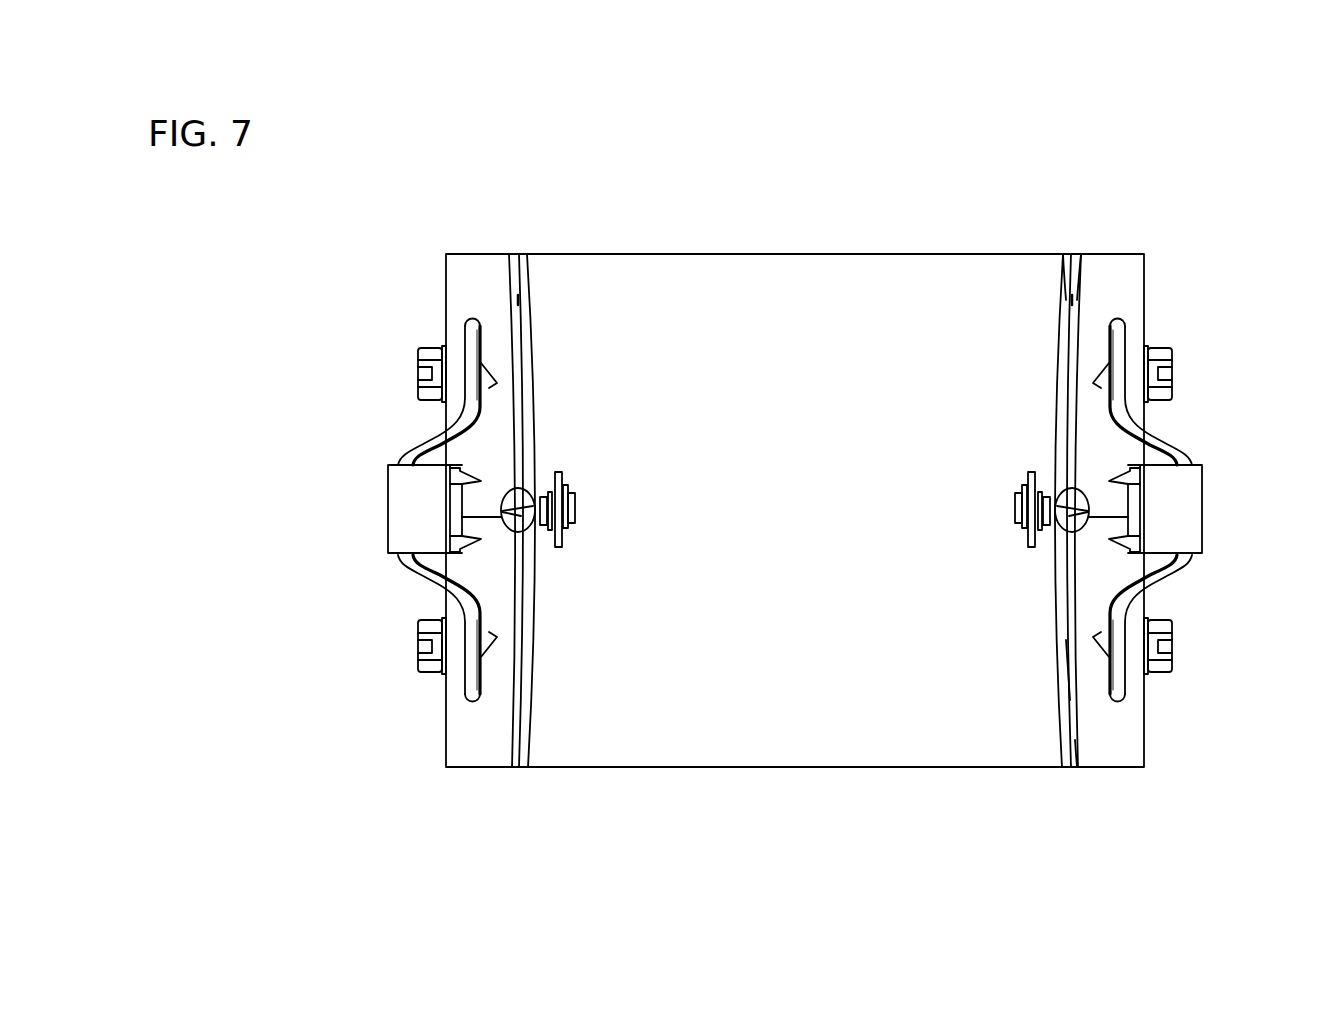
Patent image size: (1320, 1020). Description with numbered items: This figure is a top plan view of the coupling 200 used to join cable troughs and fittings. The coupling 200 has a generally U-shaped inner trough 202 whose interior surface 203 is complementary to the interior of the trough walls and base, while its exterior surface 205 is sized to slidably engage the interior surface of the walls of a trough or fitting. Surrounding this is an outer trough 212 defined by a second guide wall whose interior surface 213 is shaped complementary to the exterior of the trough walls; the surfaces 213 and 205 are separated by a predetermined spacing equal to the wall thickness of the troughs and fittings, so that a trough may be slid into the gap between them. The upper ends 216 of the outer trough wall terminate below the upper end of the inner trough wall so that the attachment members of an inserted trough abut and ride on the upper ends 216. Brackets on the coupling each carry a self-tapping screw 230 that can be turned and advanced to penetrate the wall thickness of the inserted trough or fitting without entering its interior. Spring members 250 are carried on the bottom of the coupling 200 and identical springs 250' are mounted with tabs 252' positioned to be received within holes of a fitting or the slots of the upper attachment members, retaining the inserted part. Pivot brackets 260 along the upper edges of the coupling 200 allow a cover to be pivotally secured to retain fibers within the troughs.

The coupling 200 is at (899, 204).
The upper ends of the outer trough wall 216 is at (1127, 292).
The outer trough 212 is at (1067, 265).
The inner trough 202 is at (1060, 323).
The interior surface 203 is at (1062, 663).
The exterior surface 205 is at (522, 752).
The interior surface of the second guide wall 213 is at (1075, 744).
The self-tapping screw 230 is at (430, 358).
The spring member 250 is at (793, 510).
The spring 250' is at (795, 510).
The tab 252' is at (795, 477).
The pivot bracket 260 is at (521, 507).